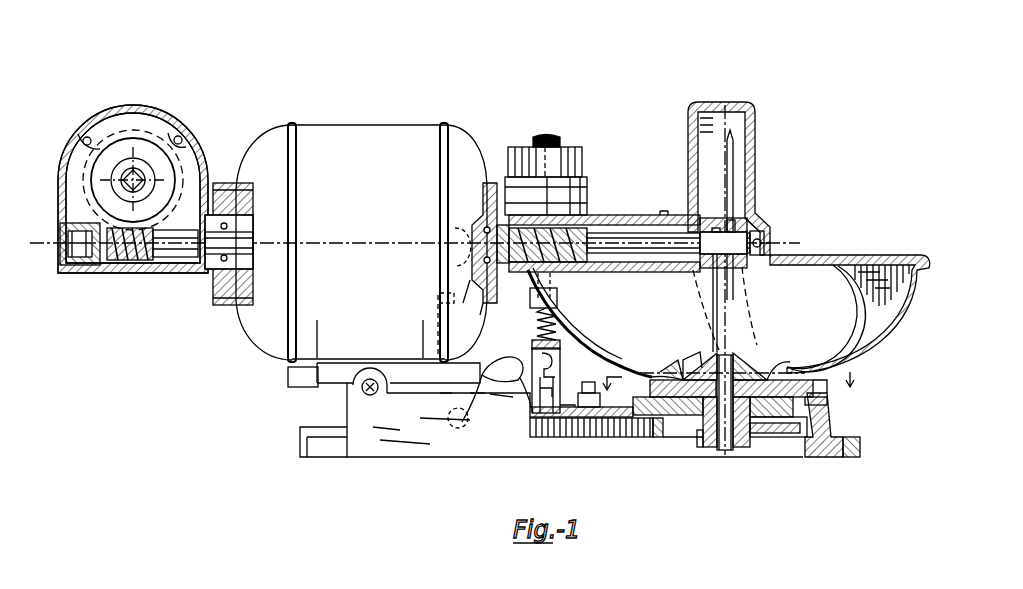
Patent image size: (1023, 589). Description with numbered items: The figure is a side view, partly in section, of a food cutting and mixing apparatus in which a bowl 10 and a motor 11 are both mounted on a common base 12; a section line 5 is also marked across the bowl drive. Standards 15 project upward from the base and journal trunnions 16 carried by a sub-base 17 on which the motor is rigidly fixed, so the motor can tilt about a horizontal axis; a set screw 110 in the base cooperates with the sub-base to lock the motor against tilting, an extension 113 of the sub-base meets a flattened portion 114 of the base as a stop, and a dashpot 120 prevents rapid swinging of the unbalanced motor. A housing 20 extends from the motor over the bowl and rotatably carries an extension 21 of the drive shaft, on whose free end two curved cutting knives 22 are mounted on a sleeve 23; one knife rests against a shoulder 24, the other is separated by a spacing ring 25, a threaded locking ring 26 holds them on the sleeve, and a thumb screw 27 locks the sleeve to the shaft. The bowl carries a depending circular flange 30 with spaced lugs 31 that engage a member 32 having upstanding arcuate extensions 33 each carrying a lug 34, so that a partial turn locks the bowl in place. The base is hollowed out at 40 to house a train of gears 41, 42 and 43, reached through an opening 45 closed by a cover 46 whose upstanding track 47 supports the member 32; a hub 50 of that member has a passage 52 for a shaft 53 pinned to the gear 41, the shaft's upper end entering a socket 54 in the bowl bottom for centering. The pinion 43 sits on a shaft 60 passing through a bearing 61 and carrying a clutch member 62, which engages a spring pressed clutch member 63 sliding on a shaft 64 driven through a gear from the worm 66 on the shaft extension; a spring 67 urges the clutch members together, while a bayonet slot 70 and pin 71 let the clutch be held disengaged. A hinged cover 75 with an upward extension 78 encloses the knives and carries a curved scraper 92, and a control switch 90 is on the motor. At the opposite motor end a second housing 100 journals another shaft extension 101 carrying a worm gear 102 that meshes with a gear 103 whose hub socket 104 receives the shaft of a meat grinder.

The section line 5 is at (734, 384).
The bowl 10 is at (905, 322).
The motor 11 is at (382, 148).
The base 12 is at (829, 418).
The standards 15 is at (357, 406).
The trunnion or pivot 16 is at (353, 390).
The sub-base 17 is at (328, 375).
The housing 20 is at (607, 215).
The extension of the drive shaft 21 is at (637, 240).
The cutting knives 22 is at (712, 222).
The sleeve 23 is at (720, 226).
The shoulder 24 is at (728, 228).
The spacing ring 25 is at (735, 230).
The locking ring 26 is at (745, 225).
The thumb screw 27 is at (762, 240).
The circular flange 30 is at (758, 357).
The lugs 31 is at (826, 326).
The member 32 is at (803, 390).
The arcuate extensions 33 is at (663, 372).
The lug 34 is at (675, 372).
The hollowed out portion 40 is at (815, 447).
The gear 41 is at (785, 418).
The gear 42 is at (625, 440).
The pinion or gear 43 is at (537, 437).
The opening 45 is at (778, 425).
The cover 46 is at (825, 403).
The upstanding flange or track 47 is at (812, 397).
The hub 50 is at (700, 418).
The passage 52 is at (716, 435).
The shaft 53 is at (725, 450).
The socket 54 is at (750, 360).
The shaft 60 is at (522, 402).
The bearing 61 is at (570, 410).
The clutch member 62 is at (532, 356).
The spring pressed clutch member 63 is at (555, 367).
The shaft 64 is at (540, 326).
The worm 66 is at (512, 215).
The spring 67 is at (540, 316).
The bayonet slot 70 is at (560, 358).
The pin 71 is at (547, 357).
The cover 75 is at (897, 255).
The upward extension 78 is at (742, 102).
The control switch 90 is at (567, 150).
The curved scraper 92 is at (875, 303).
The second housing 100 is at (188, 143).
The extension of the drive shaft 101 is at (200, 230).
The worm gear 102 is at (175, 246).
The gear 103 is at (165, 165).
The socket 104 is at (140, 178).
The set screw 110 is at (480, 392).
The extension 113 is at (287, 375).
The flattened portion 114 is at (313, 428).
The dashpot 120 is at (447, 391).